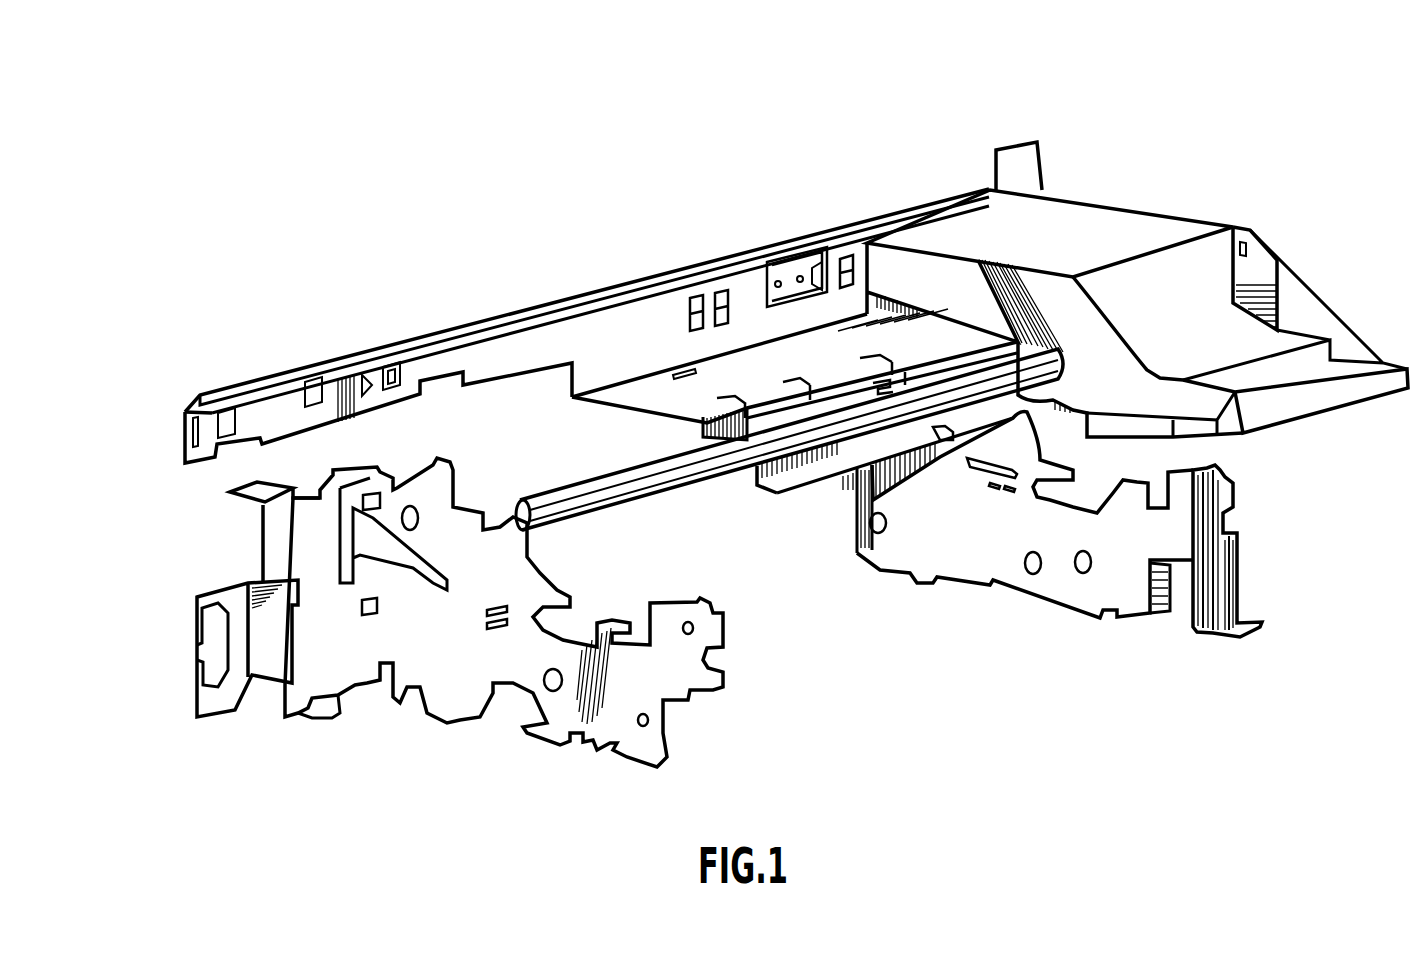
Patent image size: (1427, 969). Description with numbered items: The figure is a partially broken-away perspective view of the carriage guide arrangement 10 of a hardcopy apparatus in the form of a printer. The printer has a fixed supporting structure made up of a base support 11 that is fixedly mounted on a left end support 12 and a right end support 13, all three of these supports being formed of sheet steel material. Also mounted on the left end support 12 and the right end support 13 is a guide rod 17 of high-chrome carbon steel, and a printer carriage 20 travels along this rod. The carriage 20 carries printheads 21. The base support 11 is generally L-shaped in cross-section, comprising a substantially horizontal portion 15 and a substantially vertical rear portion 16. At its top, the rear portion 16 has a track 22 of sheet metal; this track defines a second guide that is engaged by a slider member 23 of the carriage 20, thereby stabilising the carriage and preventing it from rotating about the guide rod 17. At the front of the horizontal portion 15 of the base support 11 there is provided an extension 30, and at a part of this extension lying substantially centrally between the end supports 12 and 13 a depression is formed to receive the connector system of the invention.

The carriage guide arrangement 10 is at (1203, 172).
The base support 11 is at (668, 324).
The left end support 12 is at (677, 677).
The right end support 13 is at (1240, 547).
The horizontal portion 15 is at (647, 395).
The vertical rear portion 16 is at (512, 350).
The guide rod 17 is at (663, 480).
The printer carriage 20 is at (1074, 219).
The printheads 21 is at (1130, 444).
The track 22 is at (840, 227).
The slider member 23 is at (964, 192).
The extension 30 is at (827, 470).